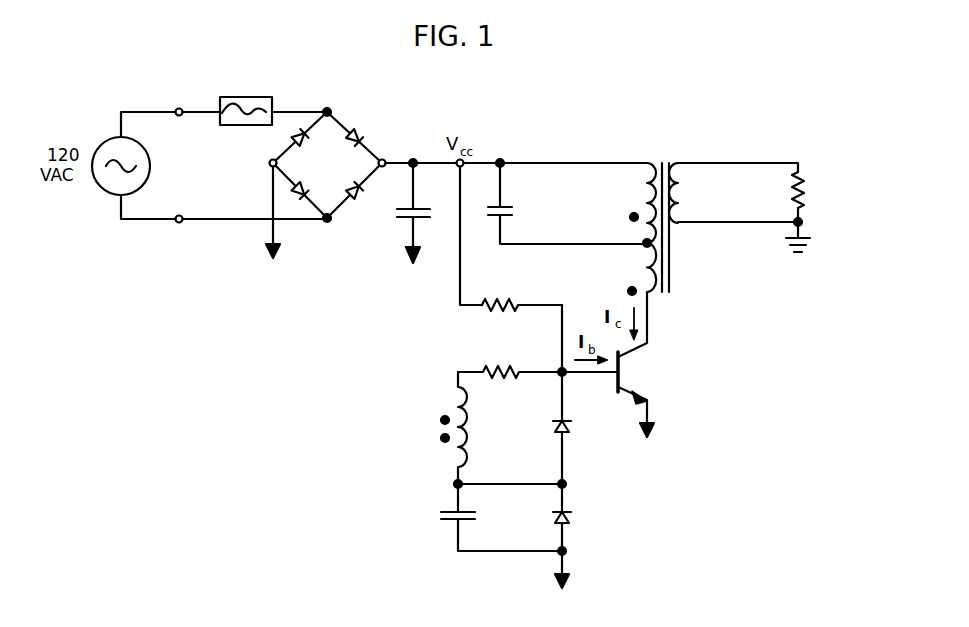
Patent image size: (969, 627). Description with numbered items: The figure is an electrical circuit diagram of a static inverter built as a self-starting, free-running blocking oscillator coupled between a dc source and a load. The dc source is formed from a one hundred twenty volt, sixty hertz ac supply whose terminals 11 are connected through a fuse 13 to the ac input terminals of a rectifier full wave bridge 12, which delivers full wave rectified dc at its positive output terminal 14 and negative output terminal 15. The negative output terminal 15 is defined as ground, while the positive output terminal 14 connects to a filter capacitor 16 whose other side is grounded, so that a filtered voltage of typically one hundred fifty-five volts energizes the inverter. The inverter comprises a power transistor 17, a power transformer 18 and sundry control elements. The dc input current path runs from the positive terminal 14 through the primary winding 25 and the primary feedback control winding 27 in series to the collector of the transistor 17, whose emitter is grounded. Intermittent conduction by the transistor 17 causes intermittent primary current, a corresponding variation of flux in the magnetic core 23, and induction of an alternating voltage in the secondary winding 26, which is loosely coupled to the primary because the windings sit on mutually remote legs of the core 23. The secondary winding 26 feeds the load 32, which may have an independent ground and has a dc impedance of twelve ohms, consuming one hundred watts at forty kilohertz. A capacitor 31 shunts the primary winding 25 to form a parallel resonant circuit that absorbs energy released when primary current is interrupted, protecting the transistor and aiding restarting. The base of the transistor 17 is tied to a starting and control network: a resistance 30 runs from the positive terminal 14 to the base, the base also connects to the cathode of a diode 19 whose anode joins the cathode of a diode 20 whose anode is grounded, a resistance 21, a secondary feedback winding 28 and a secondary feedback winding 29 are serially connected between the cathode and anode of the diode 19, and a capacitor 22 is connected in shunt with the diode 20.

The ac supply terminals 11 is at (177, 108).
The rectifier full wave bridge 12 is at (343, 180).
The fuse 13 is at (272, 103).
The positive output terminal 14 is at (381, 161).
The negative output terminal 15 is at (270, 167).
The filter capacitor 16 is at (420, 208).
The power transistor 17 is at (650, 352).
The power transformer 18 is at (662, 222).
The diode 19 is at (554, 427).
The diode 20 is at (555, 519).
The resistance 21 is at (483, 364).
The capacitor 22 is at (477, 516).
The magnetic core 23 is at (673, 281).
The primary winding 25 is at (647, 161).
The secondary winding 26 is at (679, 224).
The primary feedback control winding 27 is at (652, 299).
The secondary feedback winding 28 is at (455, 395).
The secondary feedback winding 29 is at (455, 468).
The resistance 30 is at (490, 313).
The capacitor 31 is at (496, 208).
The load 32 is at (798, 170).